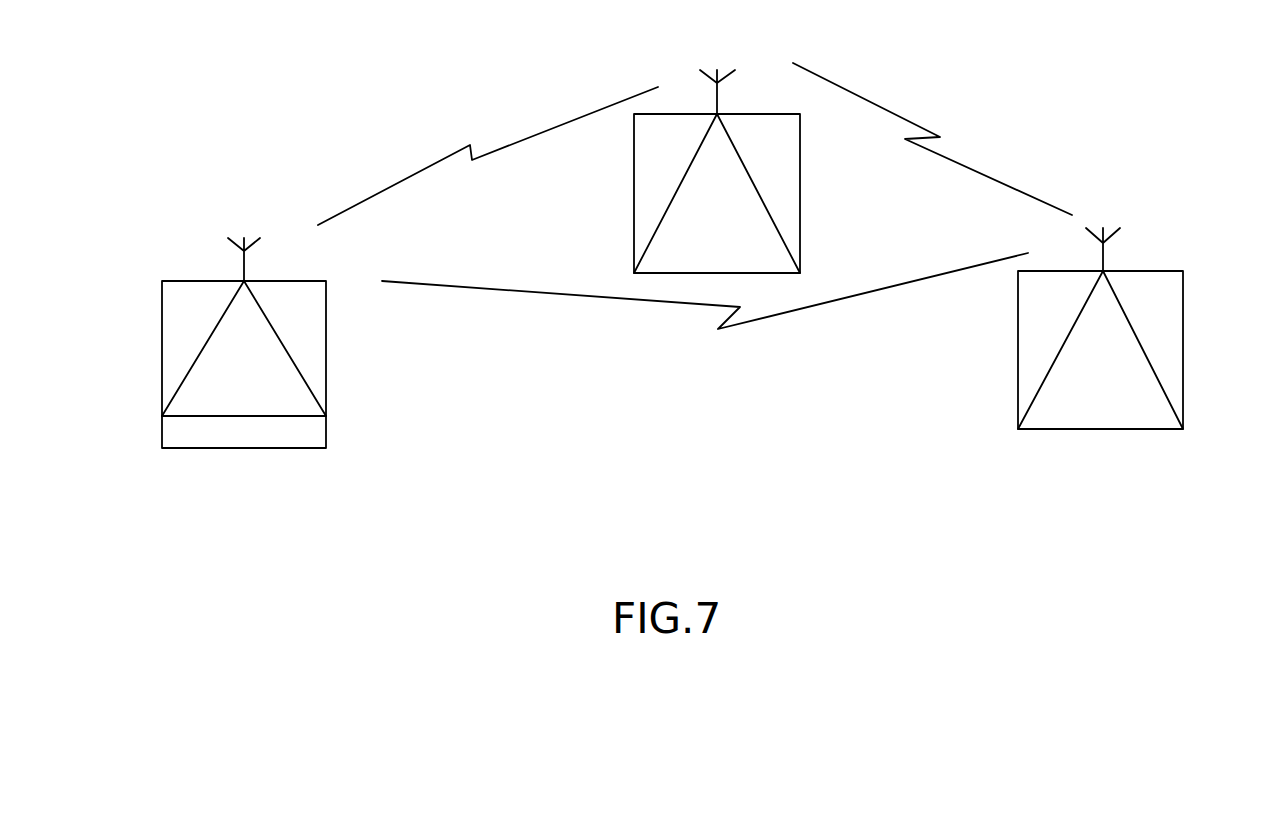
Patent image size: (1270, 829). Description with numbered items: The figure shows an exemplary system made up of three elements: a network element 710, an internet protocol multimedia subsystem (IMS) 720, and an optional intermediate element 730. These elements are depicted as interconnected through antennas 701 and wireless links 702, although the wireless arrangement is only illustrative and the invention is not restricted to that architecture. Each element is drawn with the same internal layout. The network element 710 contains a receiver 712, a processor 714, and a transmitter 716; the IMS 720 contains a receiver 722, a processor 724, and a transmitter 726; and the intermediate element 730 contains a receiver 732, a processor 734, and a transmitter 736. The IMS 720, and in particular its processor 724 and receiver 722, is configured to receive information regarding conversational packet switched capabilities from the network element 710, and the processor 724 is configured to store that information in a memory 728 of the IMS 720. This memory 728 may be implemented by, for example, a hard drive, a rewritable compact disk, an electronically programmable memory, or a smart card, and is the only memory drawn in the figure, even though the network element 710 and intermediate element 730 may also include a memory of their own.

The antenna 701 is at (676, 159).
The wireless link 702 is at (695, 208).
The network element 710 is at (1115, 372).
The receiver 712 is at (1060, 350).
The processor 714 is at (1100, 350).
The transmitter 716 is at (1143, 350).
The internet protocol multimedia subsystem (IMS) 720 is at (225, 382).
The receiver 722 is at (203, 348).
The processor 724 is at (244, 348).
The transmitter 726 is at (285, 348).
The memory 728 is at (244, 432).
The intermediate element 730 is at (742, 193).
The receiver 732 is at (675, 193).
The processor 734 is at (717, 193).
The transmitter 736 is at (758, 193).